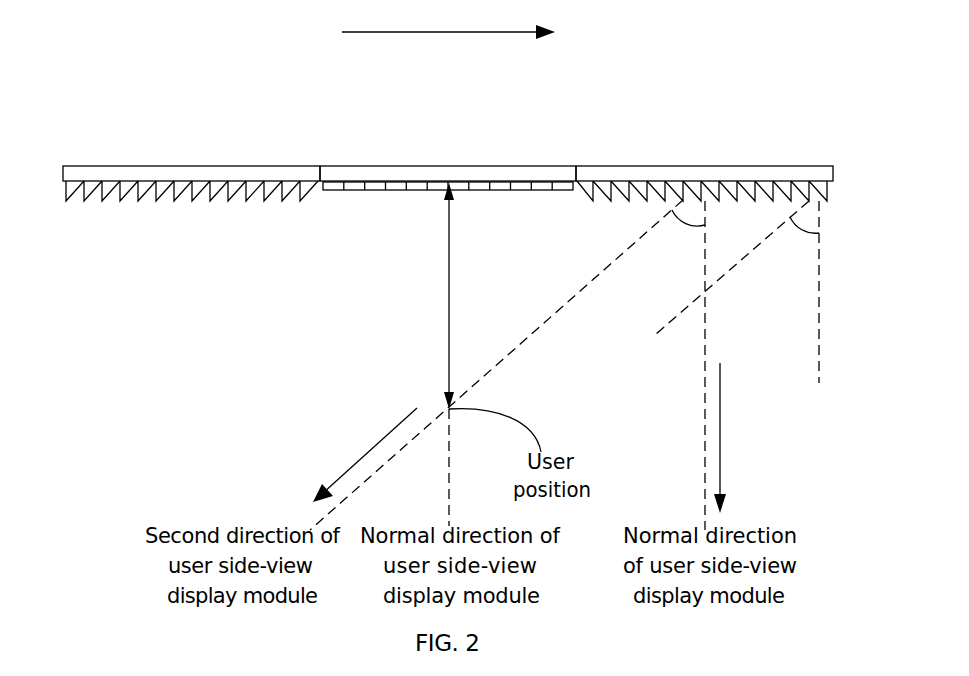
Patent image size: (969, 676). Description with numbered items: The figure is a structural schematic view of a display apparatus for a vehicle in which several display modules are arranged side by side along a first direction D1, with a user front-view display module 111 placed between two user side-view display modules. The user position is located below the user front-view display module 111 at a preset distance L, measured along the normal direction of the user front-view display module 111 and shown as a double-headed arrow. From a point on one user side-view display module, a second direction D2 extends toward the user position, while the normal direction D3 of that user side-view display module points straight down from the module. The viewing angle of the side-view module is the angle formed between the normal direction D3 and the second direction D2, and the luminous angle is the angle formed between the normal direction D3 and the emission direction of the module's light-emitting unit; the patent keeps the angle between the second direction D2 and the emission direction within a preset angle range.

The user front-view display module 111 is at (395, 166).
The first direction D1 is at (448, 42).
The second direction D2 is at (365, 455).
The normal direction of the user side-view display module D3 is at (736, 438).
The preset distance L is at (457, 296).